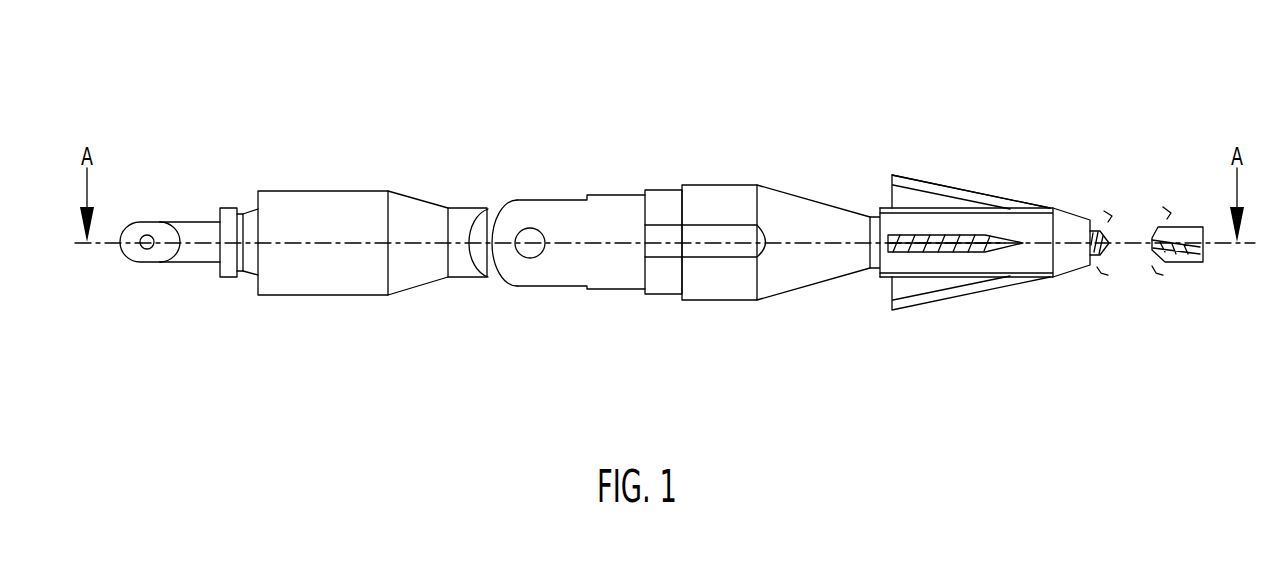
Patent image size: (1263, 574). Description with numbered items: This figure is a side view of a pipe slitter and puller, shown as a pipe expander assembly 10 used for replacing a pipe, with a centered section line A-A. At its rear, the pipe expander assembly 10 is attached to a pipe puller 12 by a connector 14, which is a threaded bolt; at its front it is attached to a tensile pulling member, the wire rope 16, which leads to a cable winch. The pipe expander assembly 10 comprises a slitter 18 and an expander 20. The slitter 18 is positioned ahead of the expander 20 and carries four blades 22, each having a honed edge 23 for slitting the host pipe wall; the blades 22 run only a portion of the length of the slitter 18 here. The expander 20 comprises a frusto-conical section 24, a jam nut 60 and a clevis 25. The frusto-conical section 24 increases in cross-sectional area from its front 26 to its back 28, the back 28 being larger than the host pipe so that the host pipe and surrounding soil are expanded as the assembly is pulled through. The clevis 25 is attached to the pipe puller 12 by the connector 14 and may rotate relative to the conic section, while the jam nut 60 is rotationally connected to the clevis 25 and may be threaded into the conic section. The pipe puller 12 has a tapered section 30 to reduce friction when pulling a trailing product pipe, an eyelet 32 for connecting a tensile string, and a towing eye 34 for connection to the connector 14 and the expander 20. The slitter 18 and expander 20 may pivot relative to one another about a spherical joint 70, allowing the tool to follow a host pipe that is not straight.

The pipe expander assembly 10 is at (721, 53).
The pipe puller 12 is at (305, 198).
The connector 14 is at (528, 229).
The wire rope 16 is at (1187, 263).
The slitter 18 is at (918, 228).
The expander 20 is at (777, 191).
The blade 22 is at (946, 228).
The honed edge 23 is at (960, 190).
The frusto-conical section 24 is at (795, 283).
The clevis 25 is at (546, 231).
The front 26 is at (871, 270).
The back 28 is at (757, 299).
The tapered section 30 is at (415, 293).
The eyelet 32 is at (149, 237).
The towing eye 34 is at (490, 212).
The jam nut 60 is at (663, 294).
The spherical joint 70 is at (878, 213).